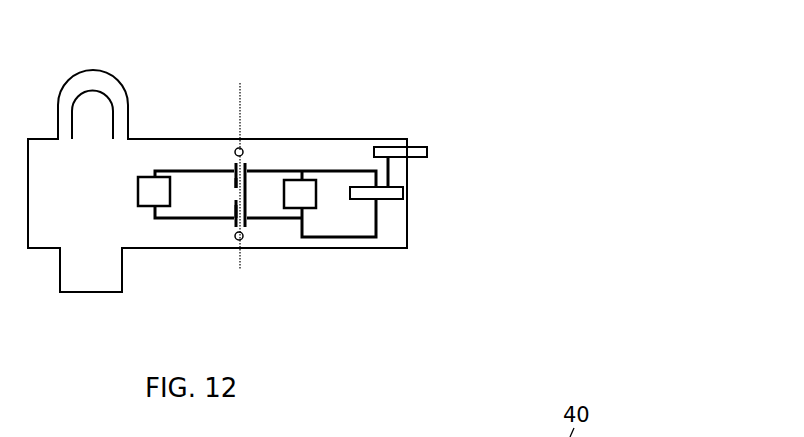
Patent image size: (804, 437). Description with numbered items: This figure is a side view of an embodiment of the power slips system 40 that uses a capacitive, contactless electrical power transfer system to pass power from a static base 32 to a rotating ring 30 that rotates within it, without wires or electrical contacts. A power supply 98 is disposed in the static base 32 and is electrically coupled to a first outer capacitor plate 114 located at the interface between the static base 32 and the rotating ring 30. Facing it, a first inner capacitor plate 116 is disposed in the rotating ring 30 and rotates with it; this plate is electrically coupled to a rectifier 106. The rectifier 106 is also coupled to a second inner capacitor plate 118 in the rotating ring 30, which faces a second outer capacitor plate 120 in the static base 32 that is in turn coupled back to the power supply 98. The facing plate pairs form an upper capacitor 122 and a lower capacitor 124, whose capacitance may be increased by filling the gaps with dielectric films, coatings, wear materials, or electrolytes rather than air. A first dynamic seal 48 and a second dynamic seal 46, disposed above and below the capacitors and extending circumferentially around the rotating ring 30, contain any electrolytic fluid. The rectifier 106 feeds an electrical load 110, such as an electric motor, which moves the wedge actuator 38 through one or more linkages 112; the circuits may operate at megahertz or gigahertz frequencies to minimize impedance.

The power slips system 40 is at (432, 69).
The static base 32 is at (153, 150).
The rotating ring 30 is at (333, 243).
The first dynamic seal 48 is at (244, 105).
The second dynamic seal 46 is at (239, 229).
The first outer capacitor plate 114 is at (236, 162).
The first inner capacitor plate 116 is at (247, 162).
The second inner capacitor plate 118 is at (246, 220).
The second outer capacitor plate 120 is at (233, 225).
The upper capacitor 122 is at (235, 183).
The lower capacitor 124 is at (235, 213).
The rectifier 106 is at (308, 182).
The power supply 98 is at (146, 192).
The wedge actuator 38 is at (422, 150).
The linkage 112 is at (392, 170).
The electrical load 110 is at (393, 200).